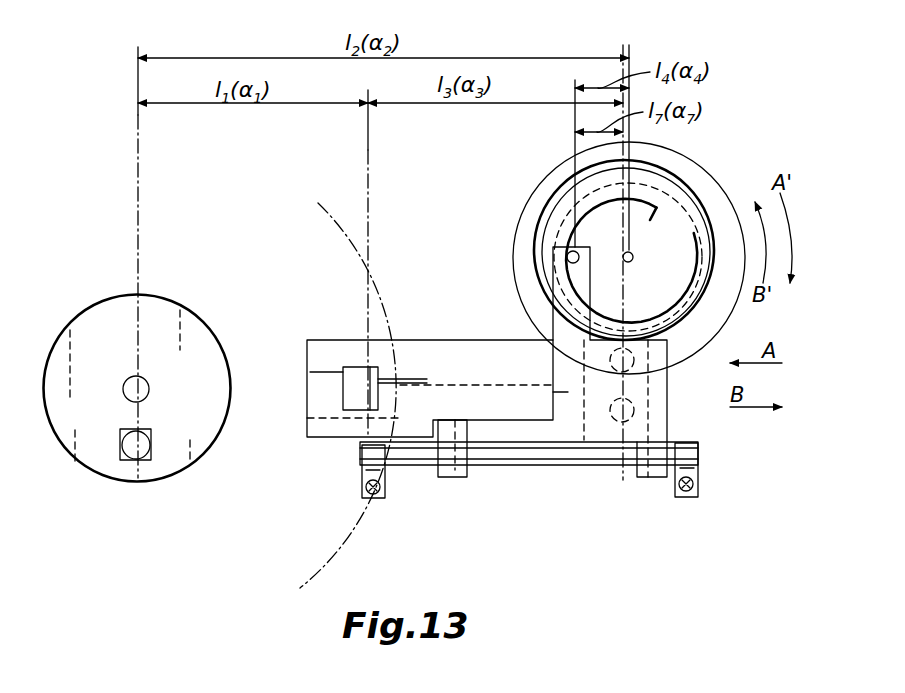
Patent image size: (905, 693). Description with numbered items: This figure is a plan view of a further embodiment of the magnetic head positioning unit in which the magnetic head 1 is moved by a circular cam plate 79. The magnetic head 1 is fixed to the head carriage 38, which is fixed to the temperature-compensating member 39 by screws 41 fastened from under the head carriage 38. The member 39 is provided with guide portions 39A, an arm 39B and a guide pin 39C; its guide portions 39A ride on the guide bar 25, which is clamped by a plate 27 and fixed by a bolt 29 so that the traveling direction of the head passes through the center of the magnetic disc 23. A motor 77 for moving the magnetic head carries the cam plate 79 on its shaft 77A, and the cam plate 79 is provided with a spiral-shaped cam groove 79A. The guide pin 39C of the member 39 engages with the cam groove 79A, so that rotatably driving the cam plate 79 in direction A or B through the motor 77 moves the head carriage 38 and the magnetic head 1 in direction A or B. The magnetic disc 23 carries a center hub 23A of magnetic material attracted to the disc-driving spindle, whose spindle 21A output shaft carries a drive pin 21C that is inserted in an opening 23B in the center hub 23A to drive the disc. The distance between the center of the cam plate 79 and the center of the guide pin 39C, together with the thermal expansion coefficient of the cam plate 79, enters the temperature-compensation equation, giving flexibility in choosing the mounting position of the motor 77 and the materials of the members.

The magnetic head 1 is at (353, 377).
The spindle 21A is at (148, 385).
The drive pin 21C is at (127, 443).
The magnetic disc 23 is at (330, 562).
The center hub 23A is at (207, 325).
The opening 23B is at (147, 433).
The guide bar 25 is at (517, 458).
The plate 27 is at (362, 473).
The bolt 29 is at (372, 498).
The head carriage 38 is at (435, 362).
The temperature-compensating member 39 is at (553, 391).
The guide portions 39A is at (452, 475).
The arm 39B is at (557, 297).
The guide pin 39C is at (567, 253).
The screws 41 is at (633, 363).
The motor 77 is at (563, 213).
The shaft 77A is at (632, 258).
The cam plate 79 is at (700, 177).
The cam groove 79A is at (708, 283).